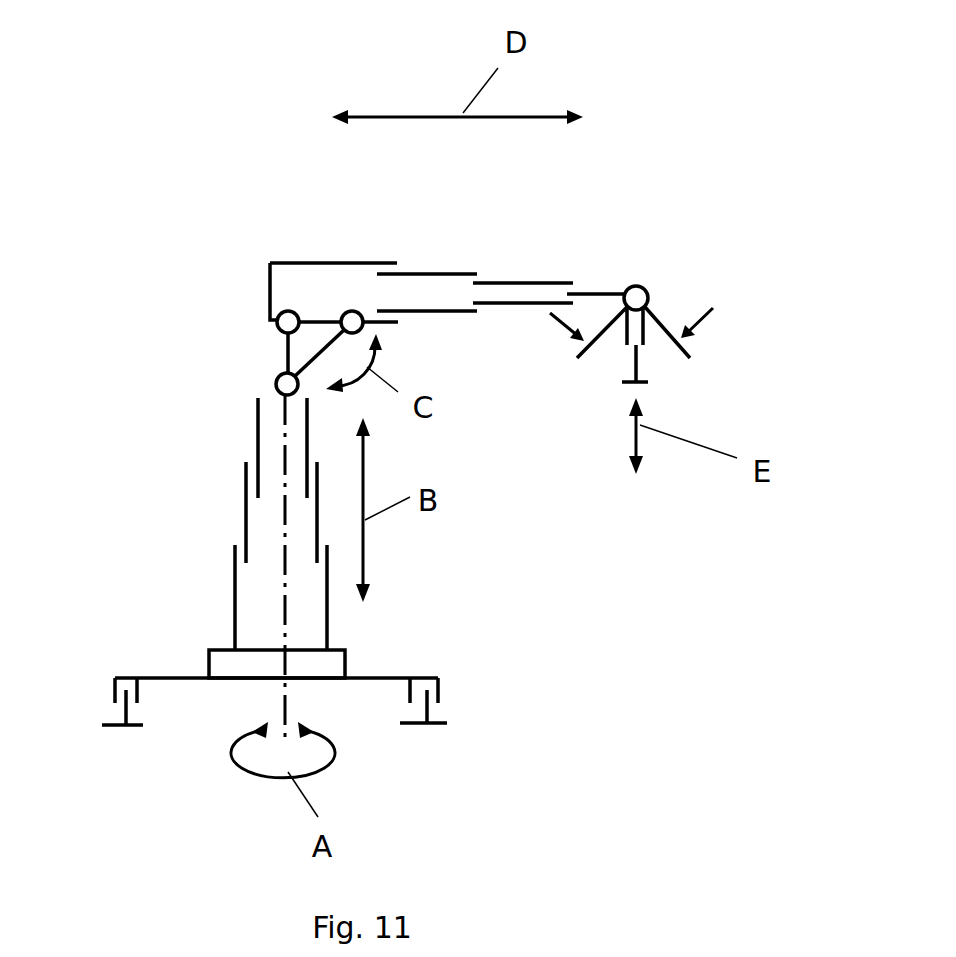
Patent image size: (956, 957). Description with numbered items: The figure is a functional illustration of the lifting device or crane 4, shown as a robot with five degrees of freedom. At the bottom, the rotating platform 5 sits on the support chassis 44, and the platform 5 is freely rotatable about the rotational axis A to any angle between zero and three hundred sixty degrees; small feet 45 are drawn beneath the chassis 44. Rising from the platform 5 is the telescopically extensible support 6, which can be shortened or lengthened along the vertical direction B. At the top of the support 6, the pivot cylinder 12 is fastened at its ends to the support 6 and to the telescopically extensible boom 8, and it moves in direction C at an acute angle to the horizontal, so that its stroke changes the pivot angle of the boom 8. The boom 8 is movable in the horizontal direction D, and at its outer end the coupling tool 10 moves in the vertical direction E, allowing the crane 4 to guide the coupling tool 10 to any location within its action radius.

The lifting device or crane 4 is at (196, 428).
The rotating platform 5 is at (340, 647).
The telescopically extensible support 6 is at (243, 505).
The telescopically extensible boom 8 is at (442, 267).
The coupling tool 10 is at (693, 328).
The lifting element / pivot cylinder 12 is at (317, 354).
The support chassis 44 is at (380, 678).
The feet 45 is at (117, 728).